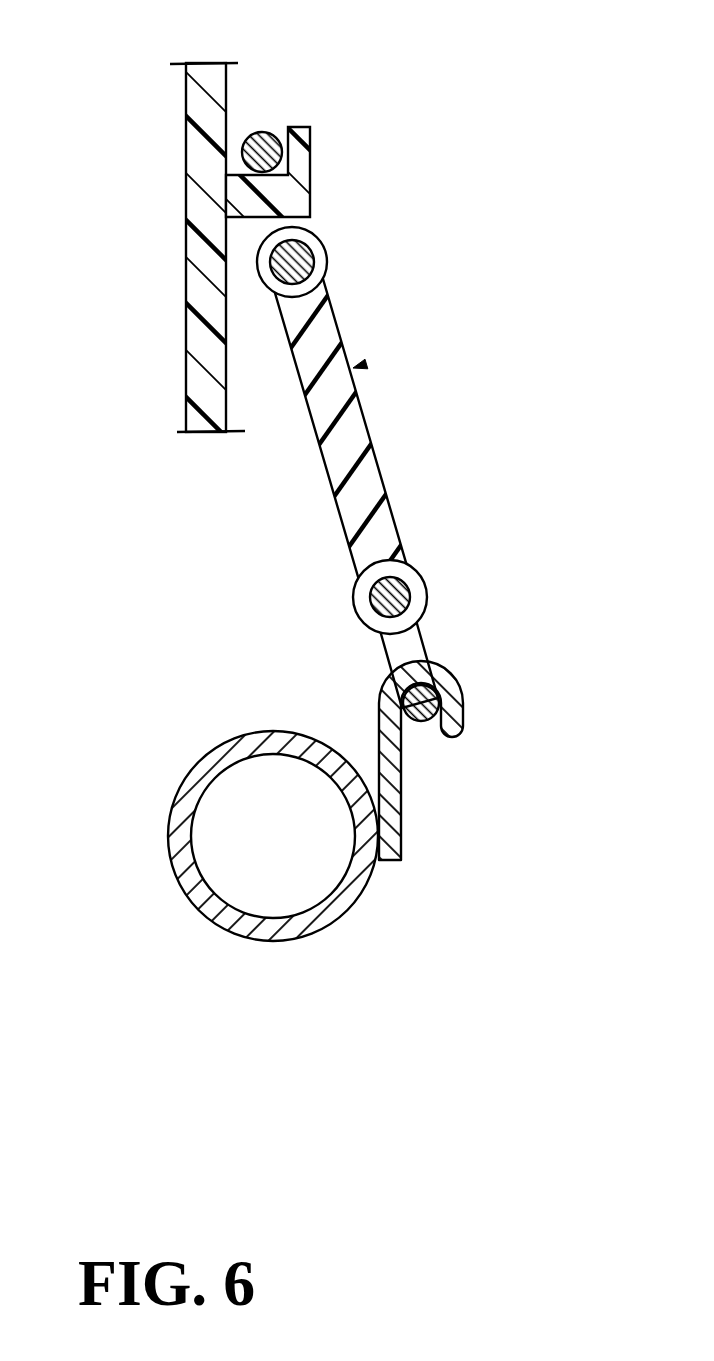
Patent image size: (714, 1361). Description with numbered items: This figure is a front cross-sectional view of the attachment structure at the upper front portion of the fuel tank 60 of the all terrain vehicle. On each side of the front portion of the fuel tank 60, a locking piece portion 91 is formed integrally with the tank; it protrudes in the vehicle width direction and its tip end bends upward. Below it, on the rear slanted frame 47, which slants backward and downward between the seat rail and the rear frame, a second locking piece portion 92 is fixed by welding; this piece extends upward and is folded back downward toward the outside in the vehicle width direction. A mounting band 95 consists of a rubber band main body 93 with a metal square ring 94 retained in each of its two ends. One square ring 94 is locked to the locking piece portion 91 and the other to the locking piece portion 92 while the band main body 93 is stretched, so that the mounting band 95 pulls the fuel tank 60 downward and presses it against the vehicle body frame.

The rear slanted frame 47 is at (168, 833).
The fuel tank 60 is at (187, 373).
The locking piece portion 91 is at (313, 168).
The locking piece portion 92 is at (404, 791).
The band main body 93 is at (367, 420).
The square ring 94 is at (262, 132).
The mounting band 95 is at (356, 367).